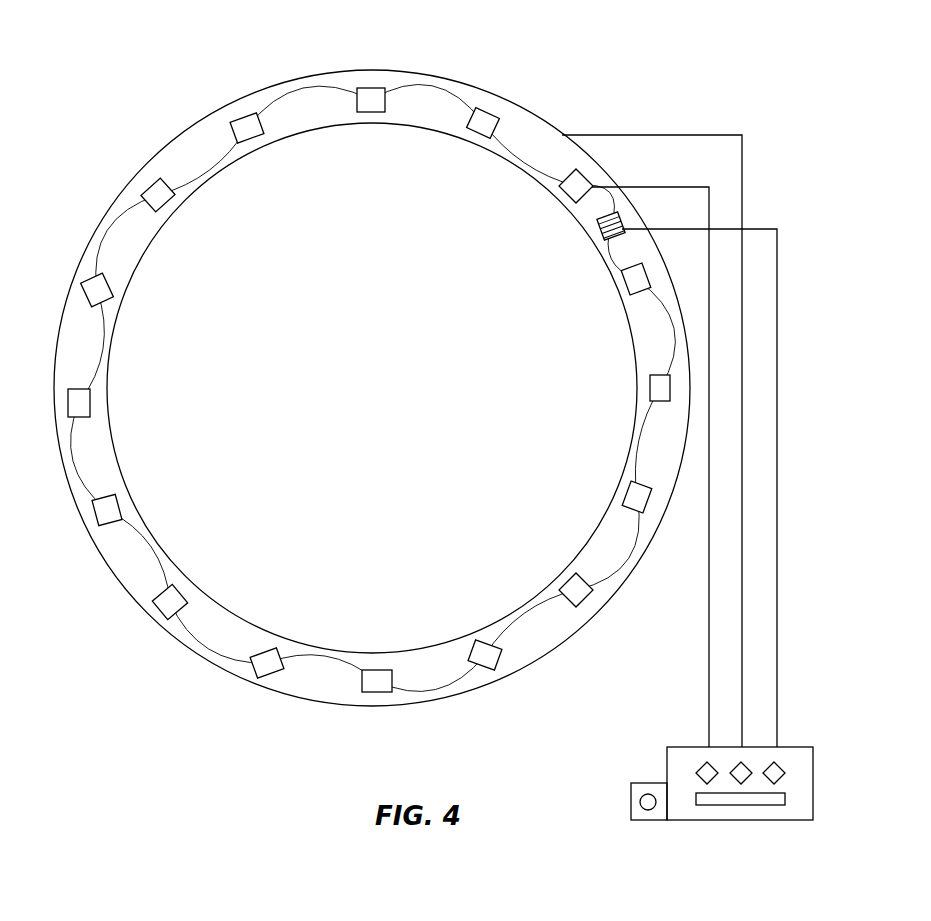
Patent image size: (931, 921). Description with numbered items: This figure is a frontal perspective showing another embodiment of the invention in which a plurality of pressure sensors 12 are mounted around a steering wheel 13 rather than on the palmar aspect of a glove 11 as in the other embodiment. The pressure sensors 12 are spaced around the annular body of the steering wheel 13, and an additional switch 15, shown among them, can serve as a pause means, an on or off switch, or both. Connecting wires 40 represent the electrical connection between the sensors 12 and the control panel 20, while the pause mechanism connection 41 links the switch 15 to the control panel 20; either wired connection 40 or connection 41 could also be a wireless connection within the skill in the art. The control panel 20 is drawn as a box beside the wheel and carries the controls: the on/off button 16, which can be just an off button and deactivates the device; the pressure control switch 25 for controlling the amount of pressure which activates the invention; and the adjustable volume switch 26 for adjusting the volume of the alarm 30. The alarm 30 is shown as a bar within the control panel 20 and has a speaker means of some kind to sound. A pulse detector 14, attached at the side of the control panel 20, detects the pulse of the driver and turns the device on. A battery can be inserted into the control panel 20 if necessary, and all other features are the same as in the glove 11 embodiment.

The glove 11 is at (437, 677).
The pressure sensors 12 is at (352, 95).
The steering wheel 13 is at (116, 238).
The pulse detector 14 is at (630, 807).
The additional switch 15 is at (596, 220).
The on/off button 16 is at (692, 775).
The control panel 20 is at (798, 798).
The pressure control switch 25 is at (727, 762).
The adjustable volume switch 26 is at (780, 762).
The alarm 30 is at (703, 805).
The connecting wires 40 is at (709, 625).
The pause mechanism connection 41 is at (777, 635).